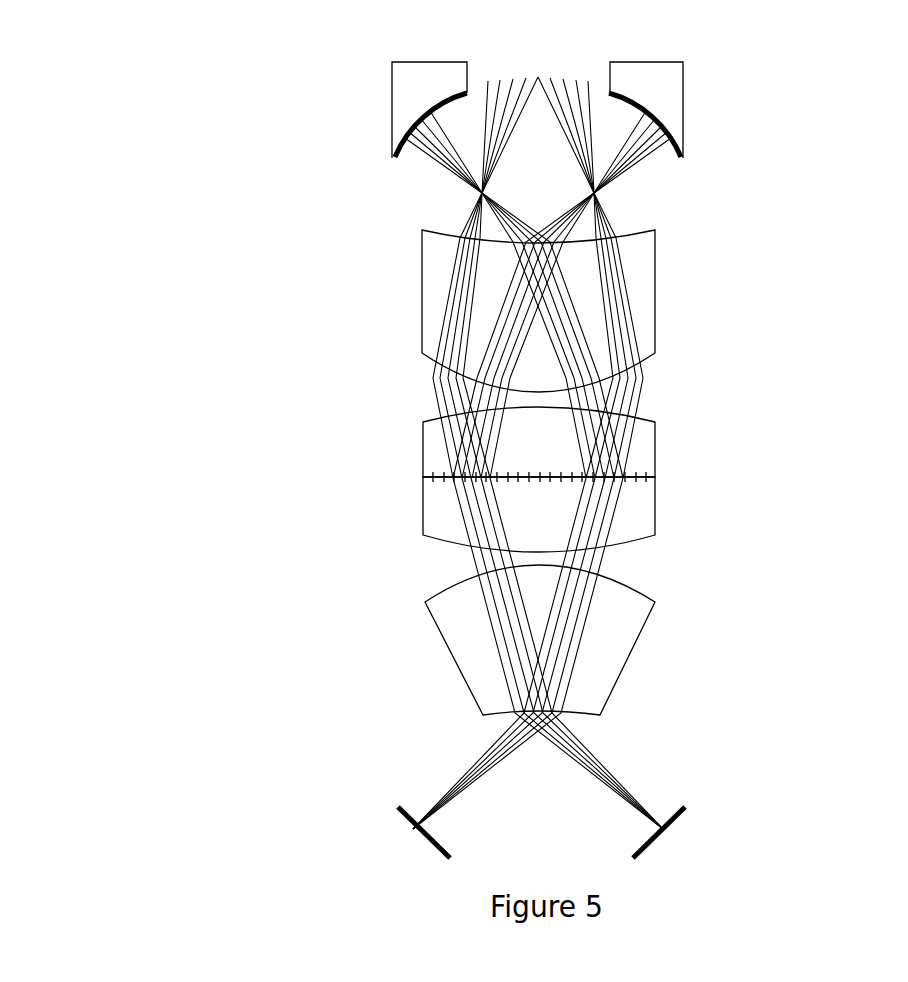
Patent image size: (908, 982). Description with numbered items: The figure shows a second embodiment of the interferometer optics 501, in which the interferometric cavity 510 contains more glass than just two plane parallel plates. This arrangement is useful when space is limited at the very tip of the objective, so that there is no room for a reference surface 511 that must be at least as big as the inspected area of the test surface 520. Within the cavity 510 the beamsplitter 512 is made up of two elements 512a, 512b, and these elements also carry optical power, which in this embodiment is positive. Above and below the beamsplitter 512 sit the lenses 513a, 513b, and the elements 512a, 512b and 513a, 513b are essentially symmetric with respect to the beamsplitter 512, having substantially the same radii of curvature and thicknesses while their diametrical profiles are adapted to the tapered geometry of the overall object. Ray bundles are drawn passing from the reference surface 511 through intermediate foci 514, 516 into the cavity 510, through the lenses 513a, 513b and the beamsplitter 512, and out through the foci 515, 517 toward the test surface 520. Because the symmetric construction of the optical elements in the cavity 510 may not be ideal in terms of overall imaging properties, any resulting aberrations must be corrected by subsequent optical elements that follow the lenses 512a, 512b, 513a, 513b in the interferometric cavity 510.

The optical system 501 is at (222, 178).
The reference surface 511 is at (610, 110).
The intermediate focus 514 is at (463, 177).
The intermediate focus 516 is at (622, 170).
The interferometric cavity 510 is at (544, 472).
The lens element 513a is at (643, 295).
The beamsplitter 512 is at (560, 479).
The beamsplitter element 512a is at (645, 442).
The beamsplitter element 512b is at (645, 510).
The lens element 513b is at (625, 623).
The output beam 515 is at (498, 753).
The output beam 517 is at (595, 762).
The test surface 520 is at (637, 850).